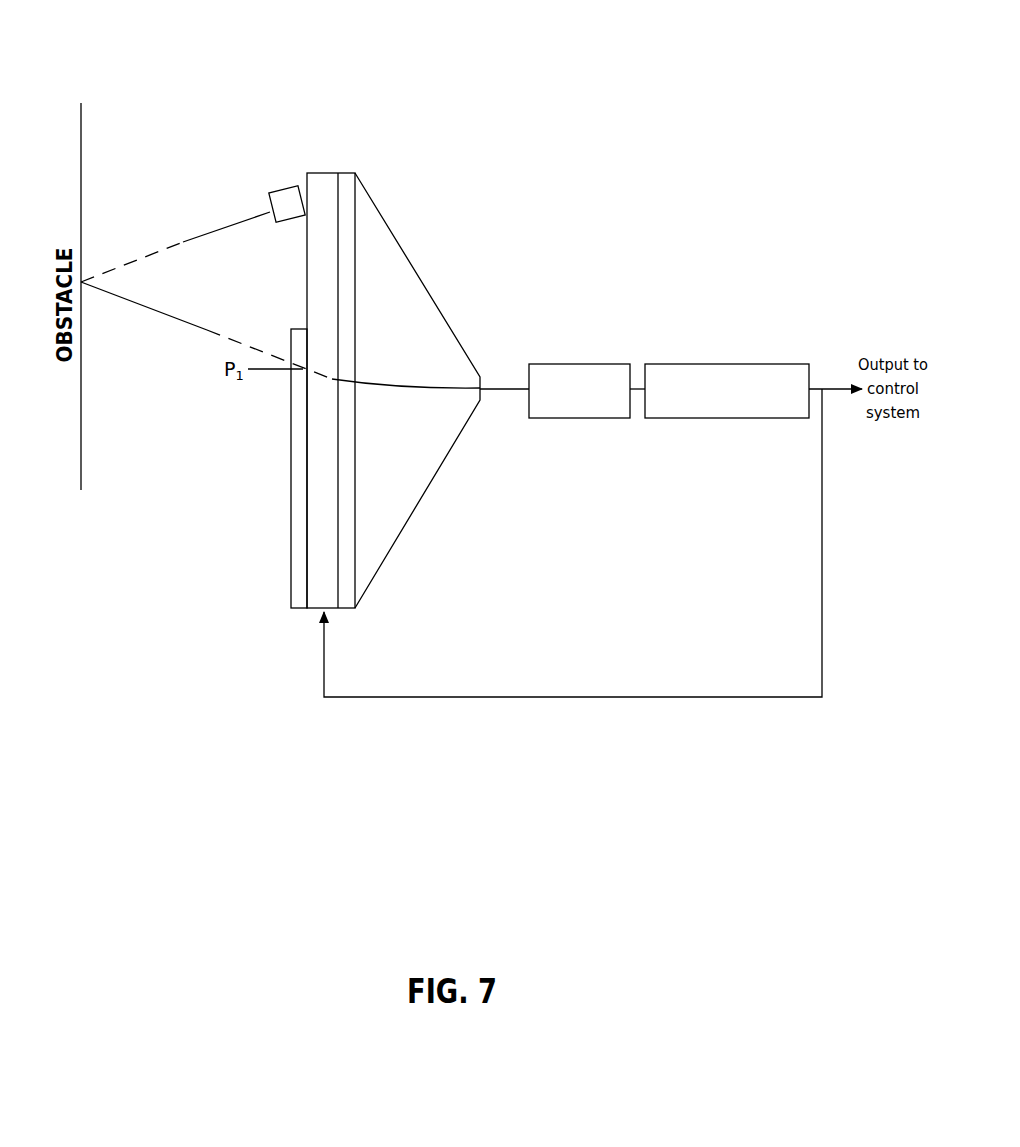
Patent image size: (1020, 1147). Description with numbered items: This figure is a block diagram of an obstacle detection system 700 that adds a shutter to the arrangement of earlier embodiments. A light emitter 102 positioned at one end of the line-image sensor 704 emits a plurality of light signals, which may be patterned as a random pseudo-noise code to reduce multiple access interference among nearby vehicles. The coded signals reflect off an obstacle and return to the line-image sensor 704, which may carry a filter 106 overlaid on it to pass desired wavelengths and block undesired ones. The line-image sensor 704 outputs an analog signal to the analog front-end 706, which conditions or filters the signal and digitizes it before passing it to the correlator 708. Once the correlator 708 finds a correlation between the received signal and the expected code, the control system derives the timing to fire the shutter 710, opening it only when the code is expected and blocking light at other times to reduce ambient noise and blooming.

The obstacle detection system 700 is at (497, 57).
The light emitter 102 is at (279, 190).
The line-image sensor 704 is at (355, 173).
The filter 106 is at (291, 568).
The analog front-end 706 is at (597, 364).
The correlator 708 is at (720, 364).
The shutter 710 is at (722, 697).